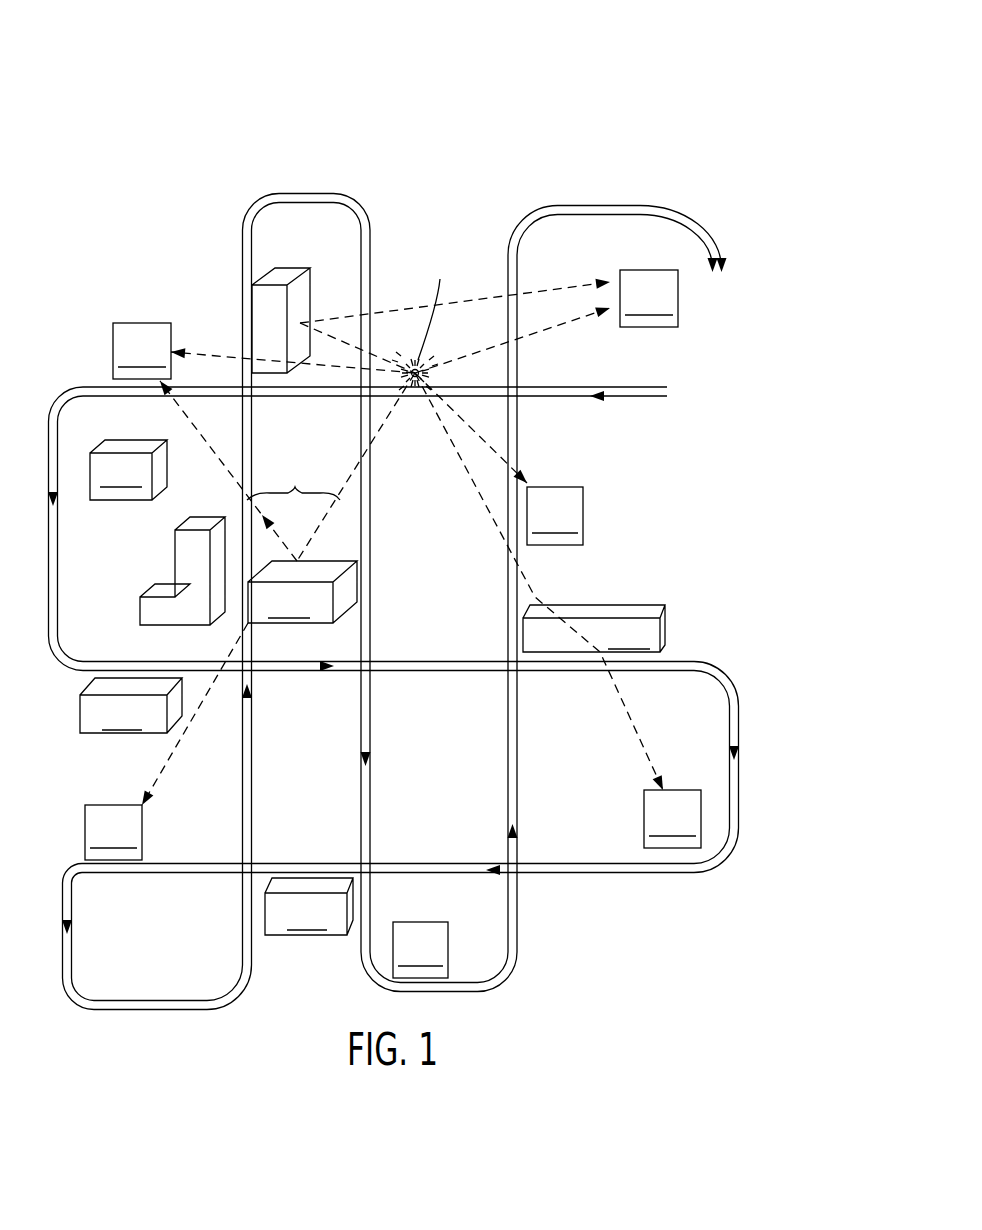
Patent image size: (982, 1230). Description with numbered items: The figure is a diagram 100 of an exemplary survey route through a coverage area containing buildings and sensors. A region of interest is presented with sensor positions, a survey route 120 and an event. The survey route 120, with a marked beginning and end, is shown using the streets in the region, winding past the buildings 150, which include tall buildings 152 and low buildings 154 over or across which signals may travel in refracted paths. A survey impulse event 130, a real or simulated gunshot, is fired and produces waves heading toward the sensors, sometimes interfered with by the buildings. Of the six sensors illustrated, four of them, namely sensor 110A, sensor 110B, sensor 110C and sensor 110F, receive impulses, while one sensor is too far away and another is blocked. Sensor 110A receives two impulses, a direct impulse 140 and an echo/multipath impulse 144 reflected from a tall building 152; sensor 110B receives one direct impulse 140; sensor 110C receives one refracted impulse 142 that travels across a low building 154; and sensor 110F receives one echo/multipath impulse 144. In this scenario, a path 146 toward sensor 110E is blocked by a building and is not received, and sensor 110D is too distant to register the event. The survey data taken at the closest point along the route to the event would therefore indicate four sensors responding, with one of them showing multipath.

The diagram 100 is at (640, 70).
The sensor 110A is at (649, 298).
The sensor 110B is at (555, 516).
The sensor 110C is at (672, 819).
The sensor 110D is at (437, 928).
The sensor 110E is at (113, 832).
The sensor 110F is at (142, 351).
The survey route 120 is at (724, 268).
The survey impulse event 130 is at (427, 343).
The direct impulse 140 is at (470, 357).
The refracted impulse 142 is at (632, 714).
The echo/multipath impulse 144 is at (552, 289).
The path 146 is at (323, 366).
The buildings 150 is at (185, 573).
The tall buildings 152 is at (310, 268).
The low buildings 154 is at (594, 628).